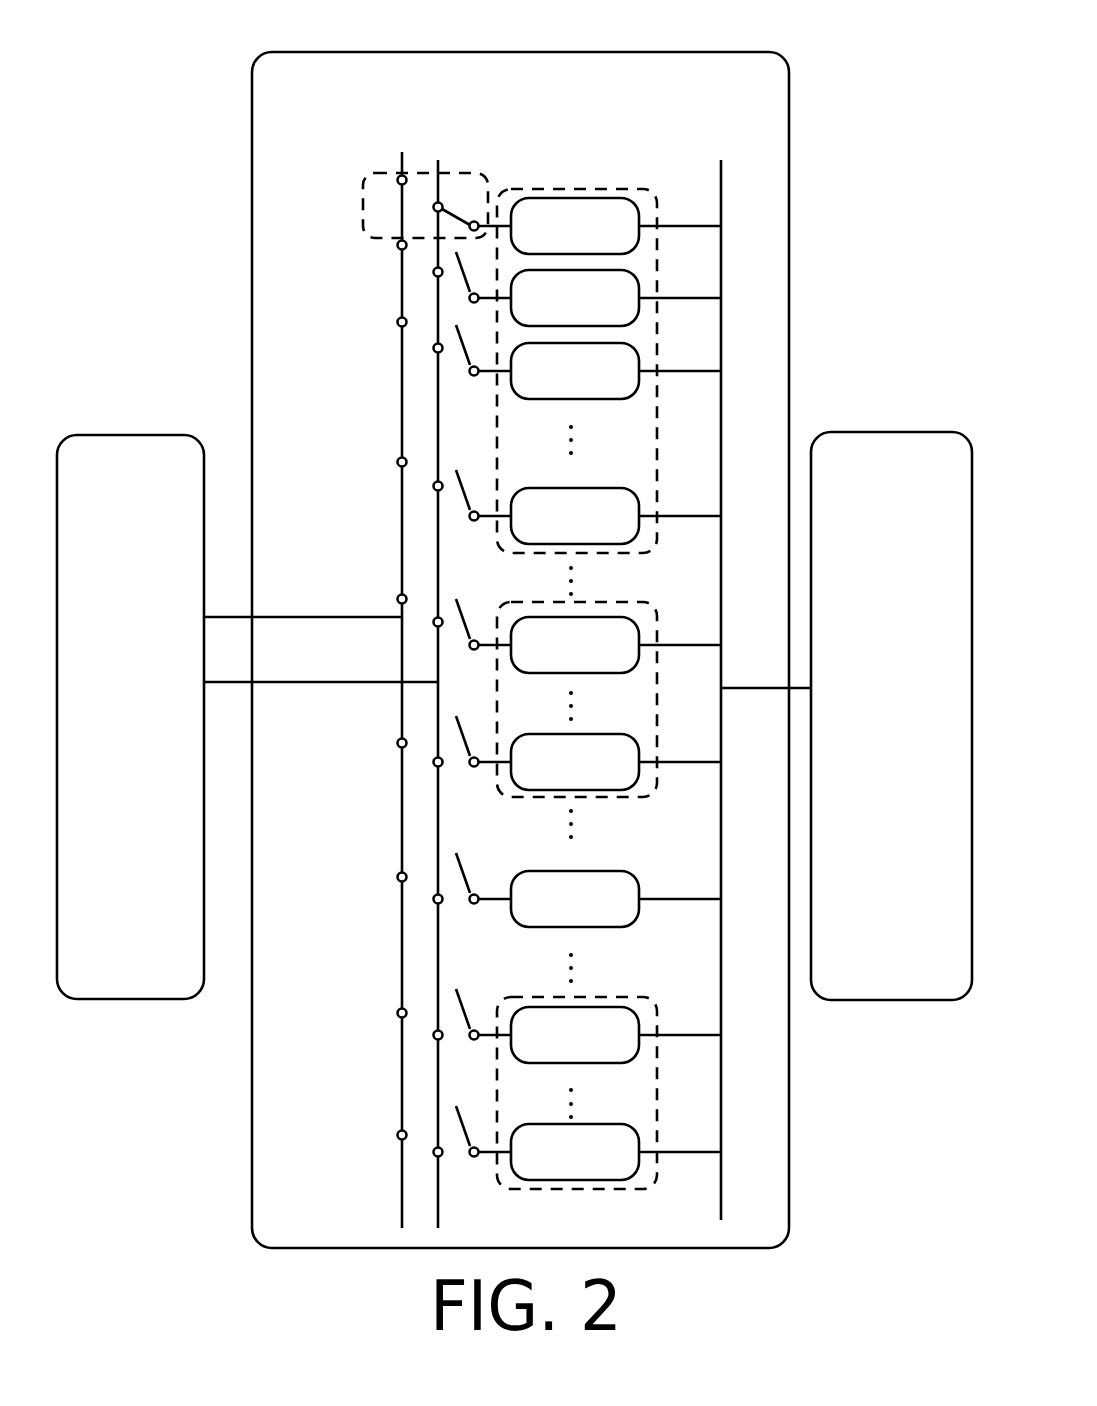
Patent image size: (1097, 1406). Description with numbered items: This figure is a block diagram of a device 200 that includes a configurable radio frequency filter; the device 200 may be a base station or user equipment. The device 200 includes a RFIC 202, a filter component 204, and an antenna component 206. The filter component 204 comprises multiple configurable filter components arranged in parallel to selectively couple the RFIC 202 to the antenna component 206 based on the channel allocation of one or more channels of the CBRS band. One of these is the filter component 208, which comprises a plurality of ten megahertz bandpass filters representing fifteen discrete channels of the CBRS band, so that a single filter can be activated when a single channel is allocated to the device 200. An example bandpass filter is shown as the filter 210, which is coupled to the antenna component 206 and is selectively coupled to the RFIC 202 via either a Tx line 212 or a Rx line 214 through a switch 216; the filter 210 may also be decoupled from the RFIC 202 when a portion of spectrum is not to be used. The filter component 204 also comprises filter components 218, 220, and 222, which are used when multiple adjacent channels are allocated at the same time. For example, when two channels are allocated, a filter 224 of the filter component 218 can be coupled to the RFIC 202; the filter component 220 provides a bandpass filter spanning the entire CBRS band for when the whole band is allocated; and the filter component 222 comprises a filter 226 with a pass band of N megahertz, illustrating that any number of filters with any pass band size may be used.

The device 200 is at (187, 36).
The RFIC 202 is at (150, 845).
The filter component 204 is at (573, 52).
The antenna component 206 is at (913, 757).
The filter component 208 is at (589, 350).
The filter 210 is at (618, 197).
The Tx line 212 is at (403, 158).
The Rx line 214 is at (439, 165).
The switch 216 is at (383, 176).
The filter component 218 is at (604, 683).
The filter component 220 is at (610, 871).
The filter component 222 is at (604, 1074).
The filter 224 is at (640, 625).
The filter 226 is at (640, 1013).